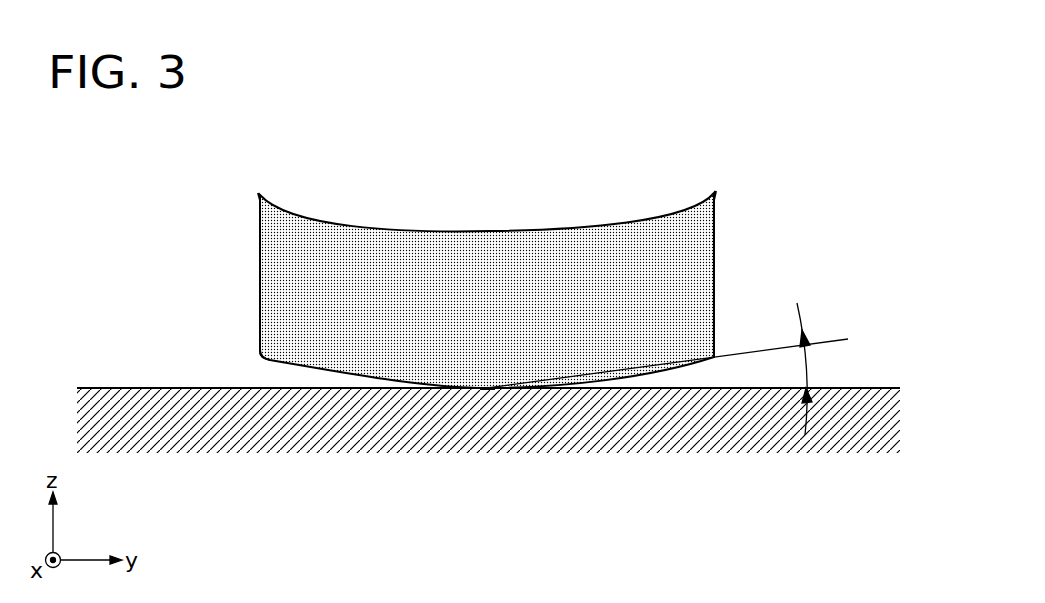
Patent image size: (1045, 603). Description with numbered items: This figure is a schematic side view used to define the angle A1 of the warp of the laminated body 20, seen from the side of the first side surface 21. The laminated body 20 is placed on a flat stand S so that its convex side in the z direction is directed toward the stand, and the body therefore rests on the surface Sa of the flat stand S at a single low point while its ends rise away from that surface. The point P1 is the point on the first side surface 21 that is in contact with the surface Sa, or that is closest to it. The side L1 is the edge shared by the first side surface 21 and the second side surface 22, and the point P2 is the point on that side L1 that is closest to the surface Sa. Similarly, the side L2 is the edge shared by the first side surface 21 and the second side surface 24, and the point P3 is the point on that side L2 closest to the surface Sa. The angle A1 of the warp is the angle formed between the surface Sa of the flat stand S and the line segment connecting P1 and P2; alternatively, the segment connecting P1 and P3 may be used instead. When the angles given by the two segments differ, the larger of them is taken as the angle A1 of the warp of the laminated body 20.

The laminated body 20 is at (531, 322).
The first side surface 21 is at (320, 300).
The second side surface 22 is at (714, 247).
The second side surface 24 is at (260, 250).
The side L1 is at (714, 193).
The side L2 is at (260, 195).
The point P1 is at (486, 388).
The point P2 is at (714, 358).
The point P3 is at (262, 364).
The angle of the warp A1 is at (817, 369).
The flat stand S is at (875, 426).
The surface Sa is at (133, 388).